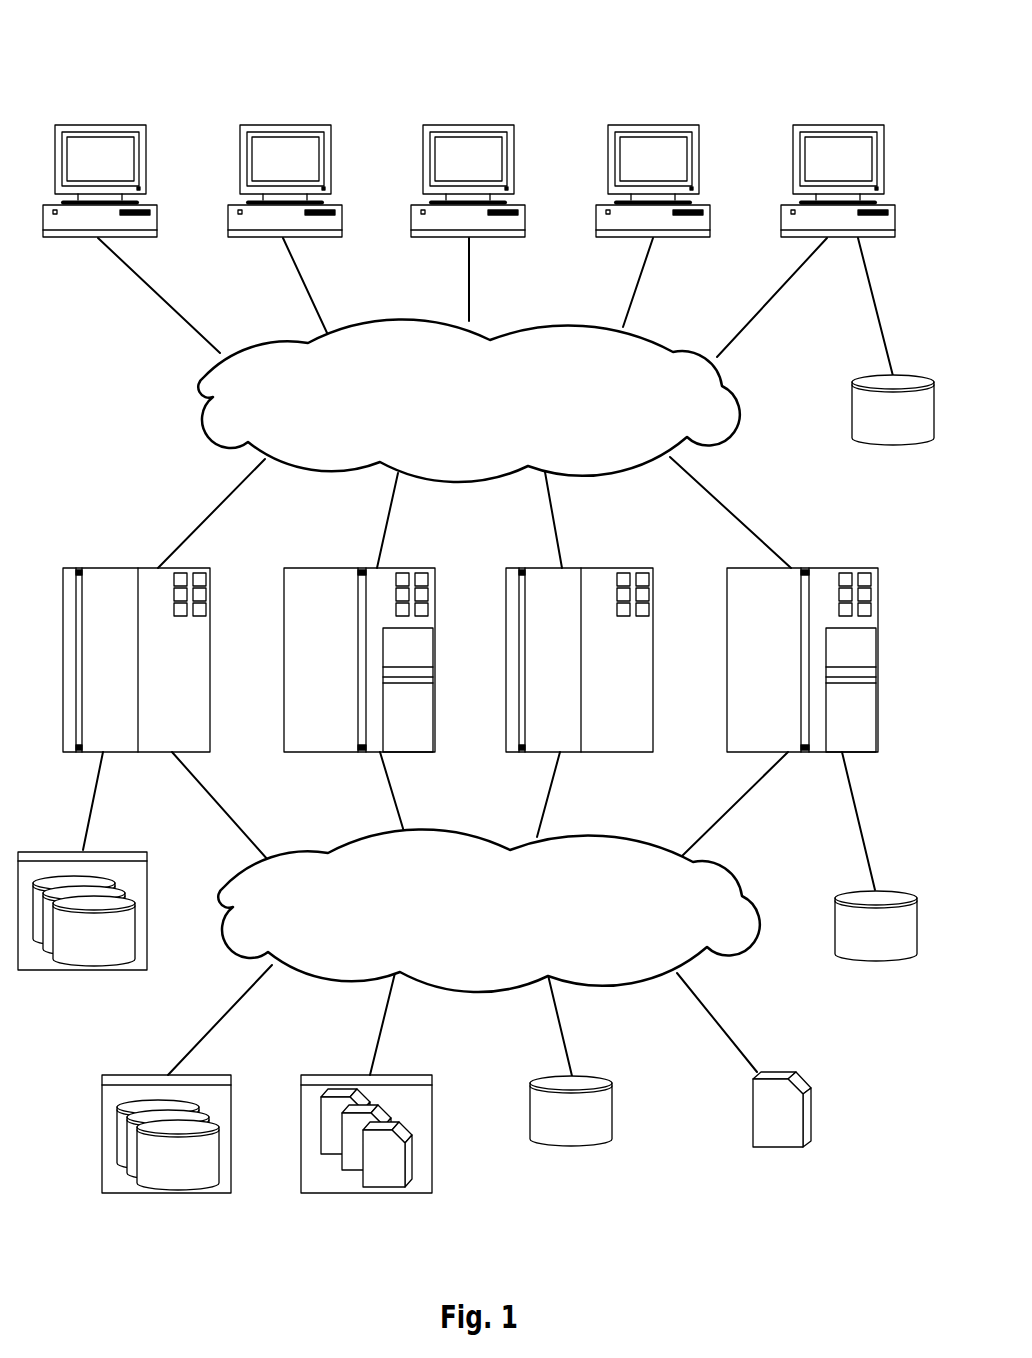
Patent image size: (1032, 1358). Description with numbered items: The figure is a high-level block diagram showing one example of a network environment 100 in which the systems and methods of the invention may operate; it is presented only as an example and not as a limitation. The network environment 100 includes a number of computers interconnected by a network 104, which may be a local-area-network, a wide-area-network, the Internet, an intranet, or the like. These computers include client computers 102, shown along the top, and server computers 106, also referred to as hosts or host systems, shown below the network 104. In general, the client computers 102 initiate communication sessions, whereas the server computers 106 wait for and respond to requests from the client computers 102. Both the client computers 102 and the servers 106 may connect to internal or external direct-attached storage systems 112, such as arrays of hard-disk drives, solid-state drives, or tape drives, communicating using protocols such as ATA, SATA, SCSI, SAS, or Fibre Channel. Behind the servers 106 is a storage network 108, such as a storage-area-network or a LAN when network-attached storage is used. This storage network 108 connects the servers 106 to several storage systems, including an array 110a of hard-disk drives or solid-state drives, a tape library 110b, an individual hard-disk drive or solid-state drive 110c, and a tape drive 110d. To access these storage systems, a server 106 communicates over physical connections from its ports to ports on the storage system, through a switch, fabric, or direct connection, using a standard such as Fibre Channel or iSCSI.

The network environment 100 is at (178, 61).
The client computer 102 is at (83, 167).
The network 104 is at (485, 428).
The server computer 106 is at (93, 667).
The storage network 108 is at (505, 938).
The array of hard-disk drives or solid-state drives 110a is at (165, 1197).
The tape library 110b is at (368, 1197).
The individual hard-disk drive or solid-state drive 110c is at (570, 1143).
The tape drive 110d is at (777, 1148).
The direct-attached storage system 112 is at (893, 442).